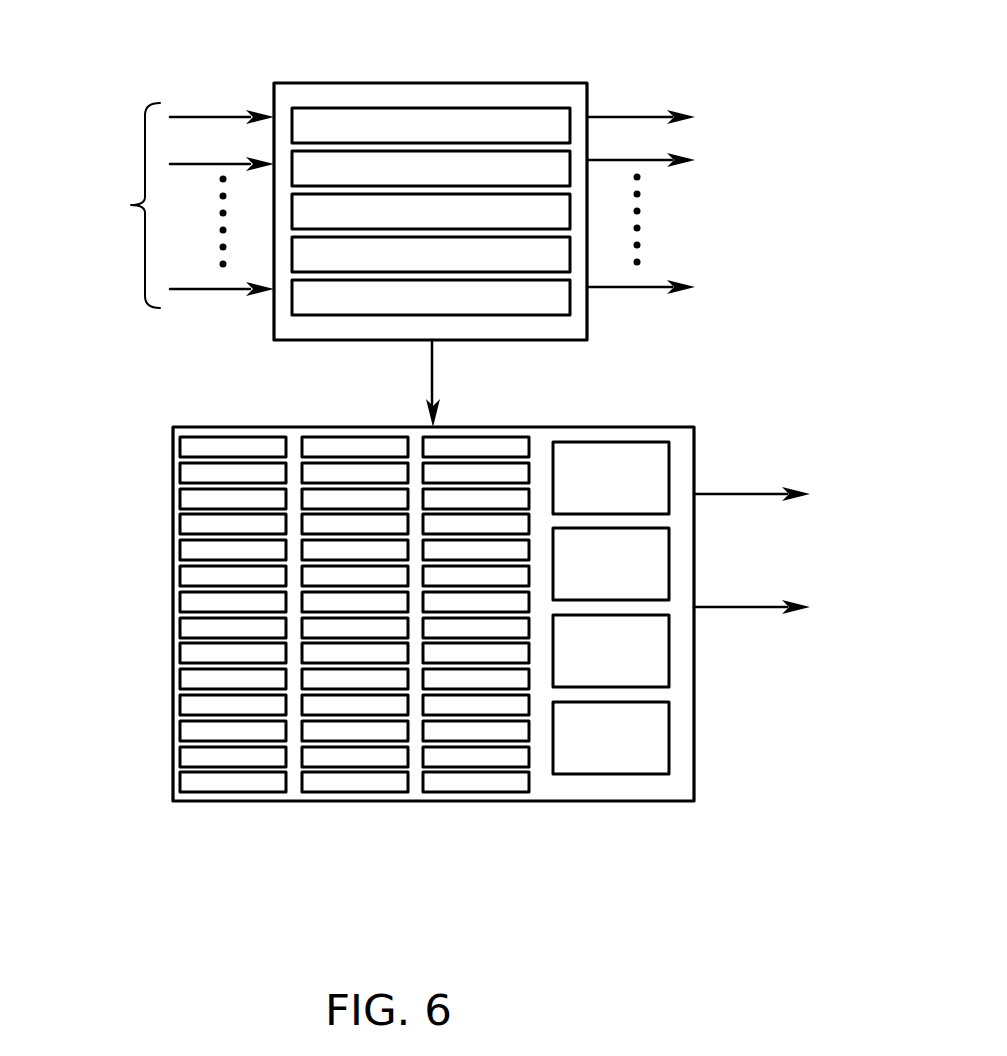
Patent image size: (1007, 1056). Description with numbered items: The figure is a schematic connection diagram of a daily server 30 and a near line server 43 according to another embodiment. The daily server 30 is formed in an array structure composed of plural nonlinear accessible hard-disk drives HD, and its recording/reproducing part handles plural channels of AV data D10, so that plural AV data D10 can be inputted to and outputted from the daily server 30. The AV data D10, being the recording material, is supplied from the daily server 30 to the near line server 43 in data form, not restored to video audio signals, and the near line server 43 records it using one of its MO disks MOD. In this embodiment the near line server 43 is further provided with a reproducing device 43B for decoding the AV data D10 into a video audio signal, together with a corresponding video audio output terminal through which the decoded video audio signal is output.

The daily server 30 is at (589, 84).
The hard-disk drive HD is at (465, 303).
The AV data D10 is at (131, 205).
The near line server 43 is at (696, 440).
The MO disk MOD is at (185, 452).
The reproducing device 43B is at (637, 735).